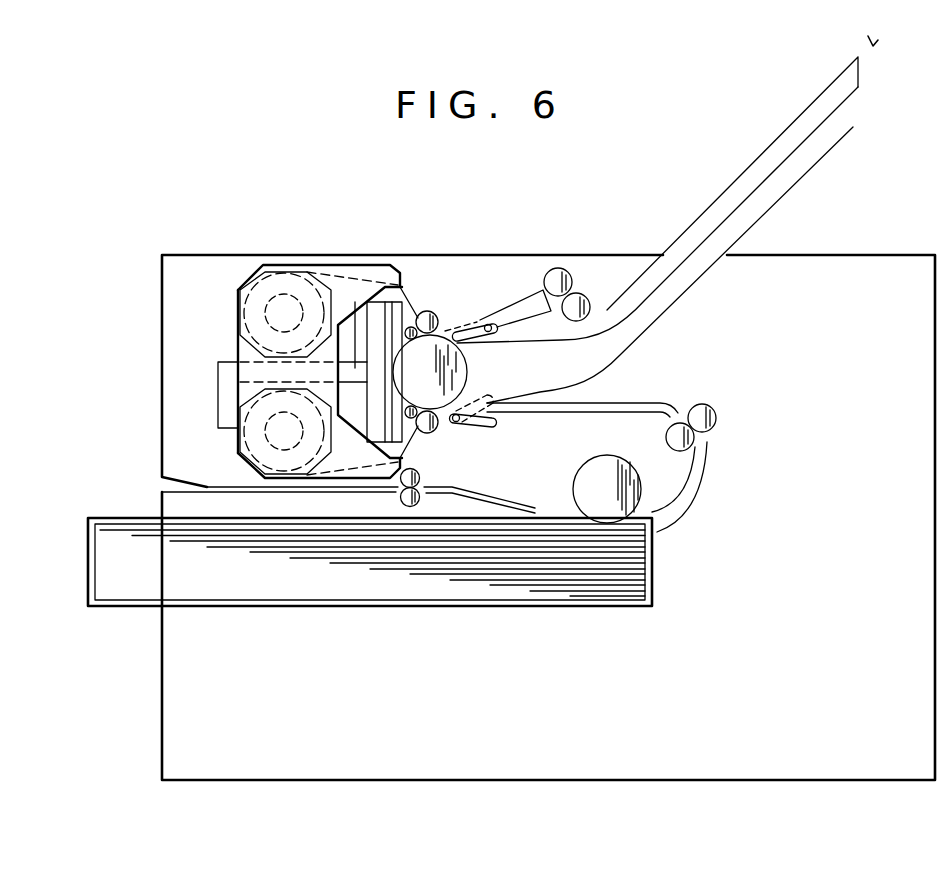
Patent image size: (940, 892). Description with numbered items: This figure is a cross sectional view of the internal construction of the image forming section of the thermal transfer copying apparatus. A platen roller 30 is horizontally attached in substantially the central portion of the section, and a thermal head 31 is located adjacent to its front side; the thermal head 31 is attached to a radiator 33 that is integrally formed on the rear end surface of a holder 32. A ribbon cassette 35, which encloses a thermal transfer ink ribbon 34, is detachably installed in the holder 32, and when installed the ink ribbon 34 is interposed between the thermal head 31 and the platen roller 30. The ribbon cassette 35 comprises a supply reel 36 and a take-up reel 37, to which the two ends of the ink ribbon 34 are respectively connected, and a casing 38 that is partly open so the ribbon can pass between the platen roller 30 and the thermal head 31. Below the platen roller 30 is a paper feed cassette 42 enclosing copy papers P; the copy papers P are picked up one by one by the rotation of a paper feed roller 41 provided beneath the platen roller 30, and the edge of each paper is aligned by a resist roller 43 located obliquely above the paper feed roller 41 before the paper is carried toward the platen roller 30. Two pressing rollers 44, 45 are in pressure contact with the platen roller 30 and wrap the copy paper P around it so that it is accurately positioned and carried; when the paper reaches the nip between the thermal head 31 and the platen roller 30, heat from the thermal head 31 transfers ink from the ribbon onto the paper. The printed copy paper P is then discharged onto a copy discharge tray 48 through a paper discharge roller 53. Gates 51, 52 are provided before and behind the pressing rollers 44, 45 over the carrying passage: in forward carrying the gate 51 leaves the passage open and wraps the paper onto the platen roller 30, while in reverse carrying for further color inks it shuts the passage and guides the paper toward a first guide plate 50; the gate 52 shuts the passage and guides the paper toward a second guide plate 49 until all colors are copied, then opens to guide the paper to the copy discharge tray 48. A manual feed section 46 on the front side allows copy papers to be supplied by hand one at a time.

The platen roller 30 is at (452, 373).
The thermal head 31 is at (396, 308).
The holder 32 is at (357, 367).
The radiator 33 is at (382, 312).
The thermal transfer ink ribbon 34 is at (413, 297).
The ribbon cassette 35 is at (287, 266).
The supply reel 36 is at (250, 290).
The take-up reel 37 is at (240, 452).
The casing 38 is at (238, 303).
The paper feed roller 41 is at (600, 466).
The paper feed cassette 42 is at (648, 565).
The resist roller 43 is at (712, 407).
The pressing roller 44 is at (432, 427).
The pressing roller 45 is at (432, 311).
The manual feed section 46 is at (337, 490).
The copy discharge tray 48 is at (858, 55).
The second guide plate 49 is at (773, 170).
The first guide plate 50 is at (795, 187).
The gate 51 is at (489, 422).
The gate 52 is at (489, 325).
The paper discharge roller 53 is at (560, 268).
The copy paper P is at (497, 572).